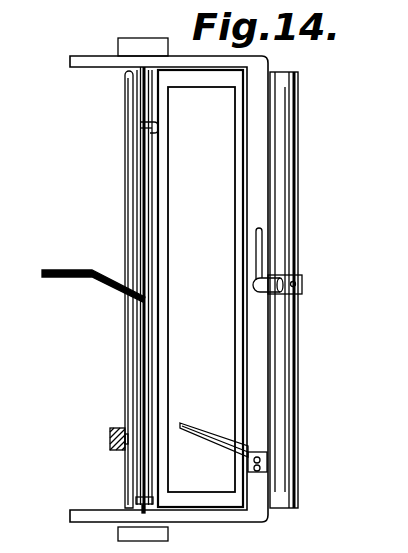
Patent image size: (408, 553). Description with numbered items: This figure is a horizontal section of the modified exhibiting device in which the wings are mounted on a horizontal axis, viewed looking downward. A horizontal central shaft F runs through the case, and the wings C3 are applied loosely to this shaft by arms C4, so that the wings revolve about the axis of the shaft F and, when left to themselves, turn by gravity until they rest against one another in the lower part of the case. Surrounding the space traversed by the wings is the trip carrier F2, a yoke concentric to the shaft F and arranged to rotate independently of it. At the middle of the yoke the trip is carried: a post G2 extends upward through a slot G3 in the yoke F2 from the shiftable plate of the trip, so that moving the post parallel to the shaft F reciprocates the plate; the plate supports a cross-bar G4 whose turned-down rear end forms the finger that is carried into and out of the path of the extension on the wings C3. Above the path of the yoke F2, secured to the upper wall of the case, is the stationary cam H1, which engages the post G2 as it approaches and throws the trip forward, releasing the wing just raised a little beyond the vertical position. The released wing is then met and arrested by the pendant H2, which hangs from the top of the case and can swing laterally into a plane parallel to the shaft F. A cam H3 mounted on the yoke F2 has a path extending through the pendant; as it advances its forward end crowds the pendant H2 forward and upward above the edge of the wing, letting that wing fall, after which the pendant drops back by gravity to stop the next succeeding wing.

The wing C3 is at (285, 196).
The arm C4 is at (161, 143).
The central shaft F is at (143, 218).
The trip carrier F2 is at (258, 337).
The stationary cam H1 is at (85, 270).
The pendant H2 is at (116, 430).
The cam H3 is at (186, 425).
The post G2 is at (281, 274).
The slot G3 is at (262, 254).
The cross-bar G4 is at (290, 300).